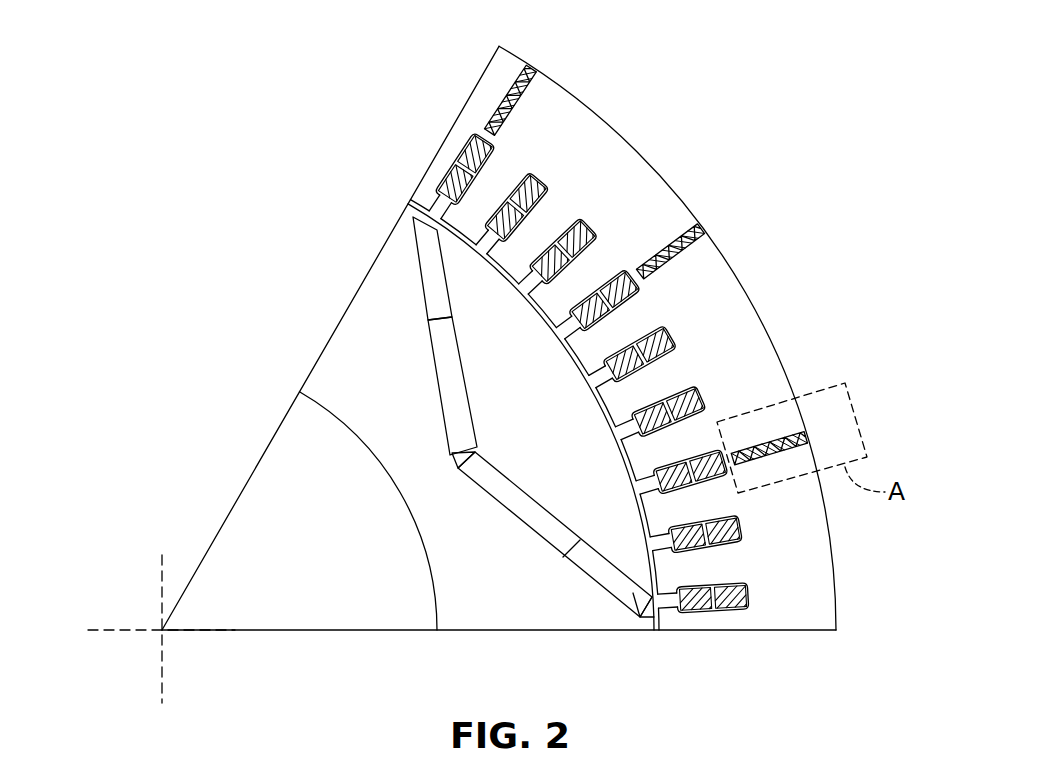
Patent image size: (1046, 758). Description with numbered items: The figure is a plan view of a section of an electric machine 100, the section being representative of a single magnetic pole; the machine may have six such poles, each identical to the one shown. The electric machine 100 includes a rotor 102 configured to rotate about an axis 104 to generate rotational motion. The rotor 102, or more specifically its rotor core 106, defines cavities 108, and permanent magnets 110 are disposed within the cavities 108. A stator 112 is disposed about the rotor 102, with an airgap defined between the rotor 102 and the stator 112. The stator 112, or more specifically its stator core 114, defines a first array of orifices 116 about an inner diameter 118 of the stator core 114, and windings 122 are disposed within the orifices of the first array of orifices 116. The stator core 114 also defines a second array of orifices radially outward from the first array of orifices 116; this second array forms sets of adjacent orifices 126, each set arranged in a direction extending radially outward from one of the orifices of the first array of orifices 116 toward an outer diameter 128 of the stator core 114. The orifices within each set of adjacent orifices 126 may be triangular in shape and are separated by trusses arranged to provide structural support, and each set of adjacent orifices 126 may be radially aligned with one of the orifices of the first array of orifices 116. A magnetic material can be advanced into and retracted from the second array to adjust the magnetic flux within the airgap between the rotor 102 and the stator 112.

The electric machine 100 is at (750, 50).
The rotor 102 is at (494, 632).
The axis 104 is at (160, 628).
The rotor core 106 is at (323, 608).
The cavities 108 is at (438, 288).
The permanent magnets 110 is at (447, 382).
The stator 112 is at (845, 605).
The stator core 114 is at (793, 590).
The first array of orifices 116 is at (529, 284).
The inner diameter 118 is at (652, 573).
The windings 122 is at (625, 269).
The sets of adjacent orifices 126 is at (560, 72).
The outer diameter 128 is at (614, 282).